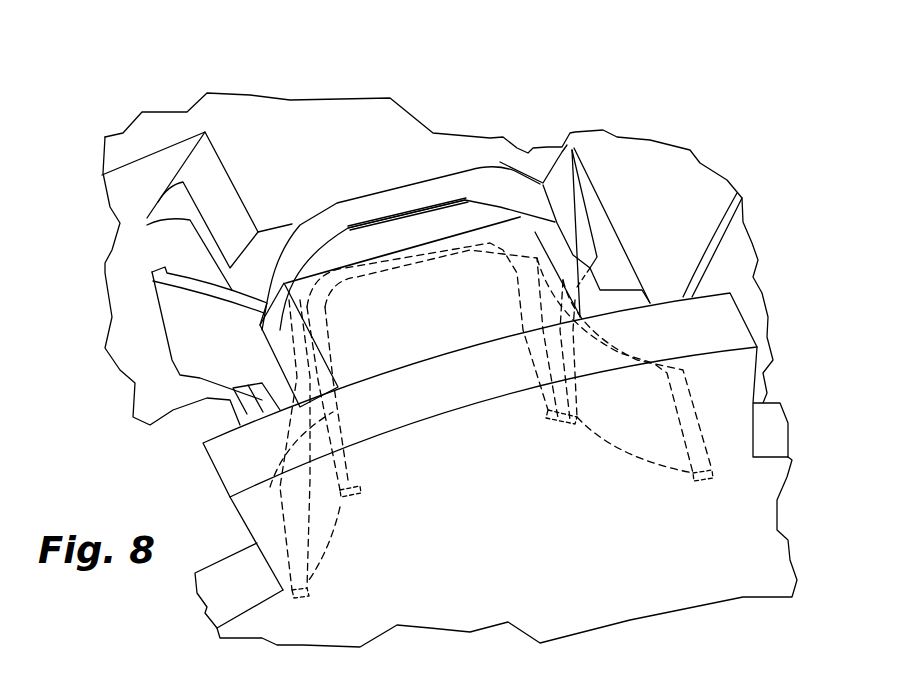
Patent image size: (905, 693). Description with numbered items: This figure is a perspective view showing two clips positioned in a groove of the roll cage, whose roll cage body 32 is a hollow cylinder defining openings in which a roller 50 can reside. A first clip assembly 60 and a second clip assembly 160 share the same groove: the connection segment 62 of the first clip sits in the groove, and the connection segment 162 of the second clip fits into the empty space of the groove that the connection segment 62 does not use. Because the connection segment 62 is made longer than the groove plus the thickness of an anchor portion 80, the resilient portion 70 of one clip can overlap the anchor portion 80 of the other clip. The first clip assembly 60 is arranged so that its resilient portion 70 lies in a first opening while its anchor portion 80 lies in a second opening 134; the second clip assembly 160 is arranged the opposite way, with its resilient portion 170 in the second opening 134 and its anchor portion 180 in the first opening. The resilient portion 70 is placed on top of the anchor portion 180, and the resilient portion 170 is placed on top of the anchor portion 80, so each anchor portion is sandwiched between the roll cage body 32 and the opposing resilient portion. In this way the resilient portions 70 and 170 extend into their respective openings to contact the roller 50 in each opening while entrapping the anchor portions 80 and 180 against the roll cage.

The roll cage body 32 is at (312, 133).
The roller 50 is at (738, 248).
The first clip assembly 60 is at (353, 258).
The connection segment 62 is at (420, 228).
The resilient portion 70 is at (568, 207).
The anchor portion 80 is at (335, 418).
The second opening 134 is at (205, 497).
The second clip assembly 160 is at (294, 226).
The connection segment 162 is at (392, 205).
The resilient portion 170 is at (197, 344).
The anchor portion 180 is at (540, 353).